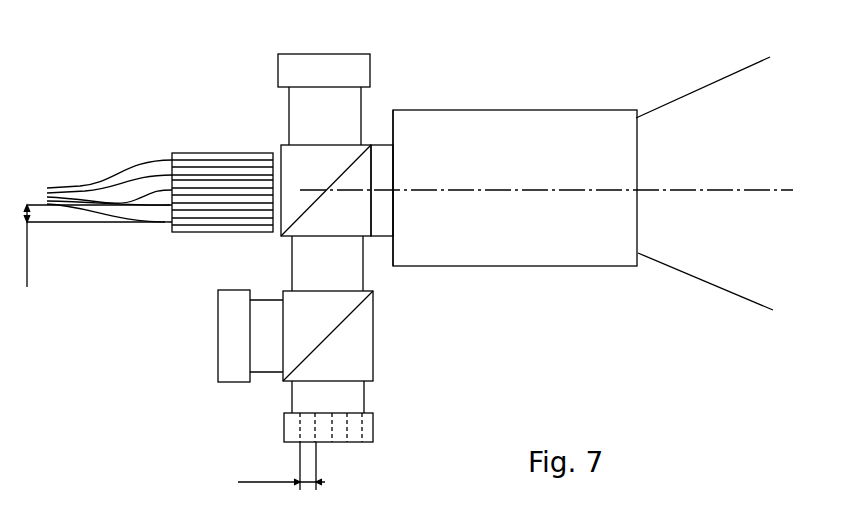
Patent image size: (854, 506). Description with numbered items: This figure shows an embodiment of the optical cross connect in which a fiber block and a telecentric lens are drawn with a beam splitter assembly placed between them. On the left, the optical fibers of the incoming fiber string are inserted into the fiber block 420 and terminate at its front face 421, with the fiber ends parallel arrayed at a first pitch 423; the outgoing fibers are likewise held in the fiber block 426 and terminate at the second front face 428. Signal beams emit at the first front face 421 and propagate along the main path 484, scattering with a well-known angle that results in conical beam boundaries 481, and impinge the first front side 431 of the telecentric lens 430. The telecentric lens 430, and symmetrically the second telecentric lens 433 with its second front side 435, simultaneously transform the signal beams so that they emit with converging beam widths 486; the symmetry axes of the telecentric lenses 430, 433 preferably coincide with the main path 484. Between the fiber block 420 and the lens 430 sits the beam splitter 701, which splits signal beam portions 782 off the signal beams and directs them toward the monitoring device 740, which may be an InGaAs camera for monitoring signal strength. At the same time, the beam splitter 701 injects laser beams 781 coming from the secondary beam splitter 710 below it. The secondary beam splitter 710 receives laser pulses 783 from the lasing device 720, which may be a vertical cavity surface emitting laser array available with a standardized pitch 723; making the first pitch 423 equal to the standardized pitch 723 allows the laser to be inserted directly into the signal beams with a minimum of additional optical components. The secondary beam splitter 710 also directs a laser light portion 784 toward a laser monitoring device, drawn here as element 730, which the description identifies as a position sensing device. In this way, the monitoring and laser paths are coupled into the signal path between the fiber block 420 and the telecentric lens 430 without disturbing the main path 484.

The monitoring device 740 is at (305, 54).
The signal beam portions 782 is at (289, 113).
The beam splitter 701 is at (298, 163).
The conical beam boundaries 481 is at (383, 145).
The first telecentric lens 430 is at (515, 143).
The second telecentric lens 433 is at (548, 110).
The first front side 431 is at (492, 221).
The second front side 435 is at (397, 212).
The main path 484 is at (568, 190).
The converging beam widths 486 is at (715, 82).
The first fiber block 420 is at (160, 165).
The second fiber block 426 is at (185, 153).
The first front face 421 is at (195, 219).
The second front face 428 is at (273, 203).
The first pitch 423 is at (87, 246).
The laser beams 781 is at (363, 263).
The secondary beam splitter 710 is at (373, 345).
The light source 730 is at (218, 356).
The laser light portion 784 is at (272, 372).
The laser pulses 783 is at (365, 395).
The lasing device 720 is at (352, 442).
The standardized pitch 723 is at (281, 466).